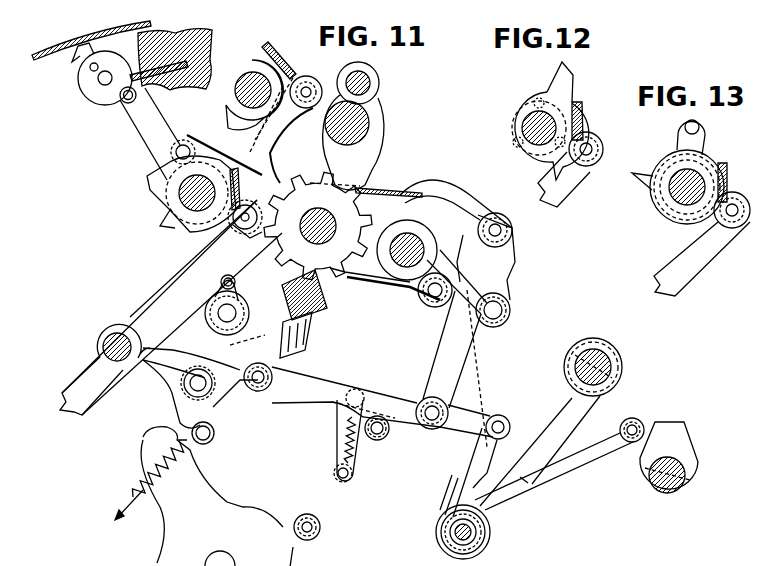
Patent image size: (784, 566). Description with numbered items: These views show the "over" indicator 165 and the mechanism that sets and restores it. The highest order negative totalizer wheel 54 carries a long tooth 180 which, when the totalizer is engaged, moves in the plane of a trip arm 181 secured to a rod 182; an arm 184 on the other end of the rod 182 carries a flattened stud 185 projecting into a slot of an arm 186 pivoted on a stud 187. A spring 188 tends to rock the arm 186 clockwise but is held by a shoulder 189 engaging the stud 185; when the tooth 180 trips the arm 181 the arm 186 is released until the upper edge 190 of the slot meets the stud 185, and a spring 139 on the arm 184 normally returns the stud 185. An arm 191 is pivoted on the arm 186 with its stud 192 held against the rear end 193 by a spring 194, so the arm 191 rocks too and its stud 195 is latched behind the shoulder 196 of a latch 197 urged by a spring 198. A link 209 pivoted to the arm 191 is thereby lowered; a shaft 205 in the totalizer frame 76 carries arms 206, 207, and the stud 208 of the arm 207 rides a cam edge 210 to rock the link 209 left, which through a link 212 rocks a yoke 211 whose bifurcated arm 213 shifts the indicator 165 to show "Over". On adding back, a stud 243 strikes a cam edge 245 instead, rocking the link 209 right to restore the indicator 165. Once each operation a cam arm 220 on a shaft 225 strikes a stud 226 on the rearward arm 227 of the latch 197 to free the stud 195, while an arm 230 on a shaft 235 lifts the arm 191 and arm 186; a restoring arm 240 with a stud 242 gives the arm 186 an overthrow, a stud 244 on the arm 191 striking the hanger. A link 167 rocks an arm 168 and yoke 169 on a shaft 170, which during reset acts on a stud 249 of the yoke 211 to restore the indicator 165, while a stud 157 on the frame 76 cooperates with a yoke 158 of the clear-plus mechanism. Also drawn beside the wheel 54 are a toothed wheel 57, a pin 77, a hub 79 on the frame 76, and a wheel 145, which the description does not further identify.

In FIG. 11, the highest order negative totalizer wheel 54 is at (347, 276).
In FIG. 11, the gear 57 is at (317, 245).
In FIG. 11, the totalizer frame 76 is at (363, 126).
In FIG. 11, the pin 77 is at (303, 338).
In FIG. 11, the shaft 79 is at (347, 146).
In FIG. 11, the spring 139 is at (265, 300).
In FIG. 11, the cam wheel 145 is at (248, 77).
In FIG. 11, the stud 157 is at (307, 87).
In FIG. 11, the yoke 158 is at (276, 56).
In FIG. 11, the over indicator 165 is at (112, 88).
In FIG. 11, the link 167 is at (157, 298).
In FIG. 12, the link 167 is at (563, 185).
In FIG. 13, the link 167 is at (707, 253).
In FIG. 11, the arm 168 is at (238, 232).
In FIG. 12, the arm 168 is at (603, 127).
In FIG. 13, the arm 168 is at (750, 183).
In FIG. 12, the yoke 169 is at (567, 103).
In FIG. 13, the yoke 169 is at (717, 163).
In FIG. 11, the shaft 170 is at (183, 207).
In FIG. 12, the shaft 170 is at (523, 120).
In FIG. 13, the shaft 170 is at (678, 203).
In FIG. 11, the long tooth 180 is at (257, 233).
In FIG. 11, the trip arm 181 is at (221, 283).
In FIG. 11, the rod 182 is at (222, 313).
In FIG. 11, the arm 184 is at (197, 347).
In FIG. 11, the flattened stud 185 is at (213, 407).
In FIG. 11, the arm 186 is at (173, 402).
In FIG. 11, the stud 187 is at (102, 347).
In FIG. 11, the spring 188 is at (151, 480).
In FIG. 11, the shoulder 189 is at (183, 373).
In FIG. 11, the upper edge 190 is at (237, 342).
In FIG. 11, the arm 191 is at (400, 397).
In FIG. 11, the stud 192 is at (343, 430).
In FIG. 11, the rear end 193 is at (343, 417).
In FIG. 11, the spring 194 is at (338, 455).
In FIG. 11, the stud 195 is at (502, 420).
In FIG. 11, the shoulder 196 is at (492, 480).
In FIG. 11, the latch 197 is at (470, 457).
In FIG. 11, the spring 198 is at (438, 520).
In FIG. 11, the shaft 205 is at (413, 216).
In FIG. 11, the arm 206 is at (440, 305).
In FIG. 11, the arm 207 is at (503, 323).
In FIG. 11, the stud 208 is at (505, 308).
In FIG. 11, the link 209 is at (463, 349).
In FIG. 11, the cam edge 210 is at (510, 283).
In FIG. 11, the yoke 211 is at (173, 182).
In FIG. 11, the link 212 is at (425, 182).
In FIG. 11, the bifurcated arm 213 is at (143, 127).
In FIG. 11, the cam arm 220 is at (683, 443).
In FIG. 11, the shaft 225 is at (678, 490).
In FIG. 11, the stud 226 is at (622, 430).
In FIG. 11, the arm 227 is at (580, 473).
In FIG. 11, the arm 230 is at (548, 403).
In FIG. 11, the shaft 235 is at (613, 367).
In FIG. 11, the restoring arm 240 is at (160, 552).
In FIG. 11, the stud 242 is at (312, 513).
In FIG. 11, the stud 243 is at (420, 297).
In FIG. 11, the stud 244 is at (393, 435).
In FIG. 11, the cam edge 245 is at (470, 232).
In FIG. 11, the stud 249 is at (183, 145).